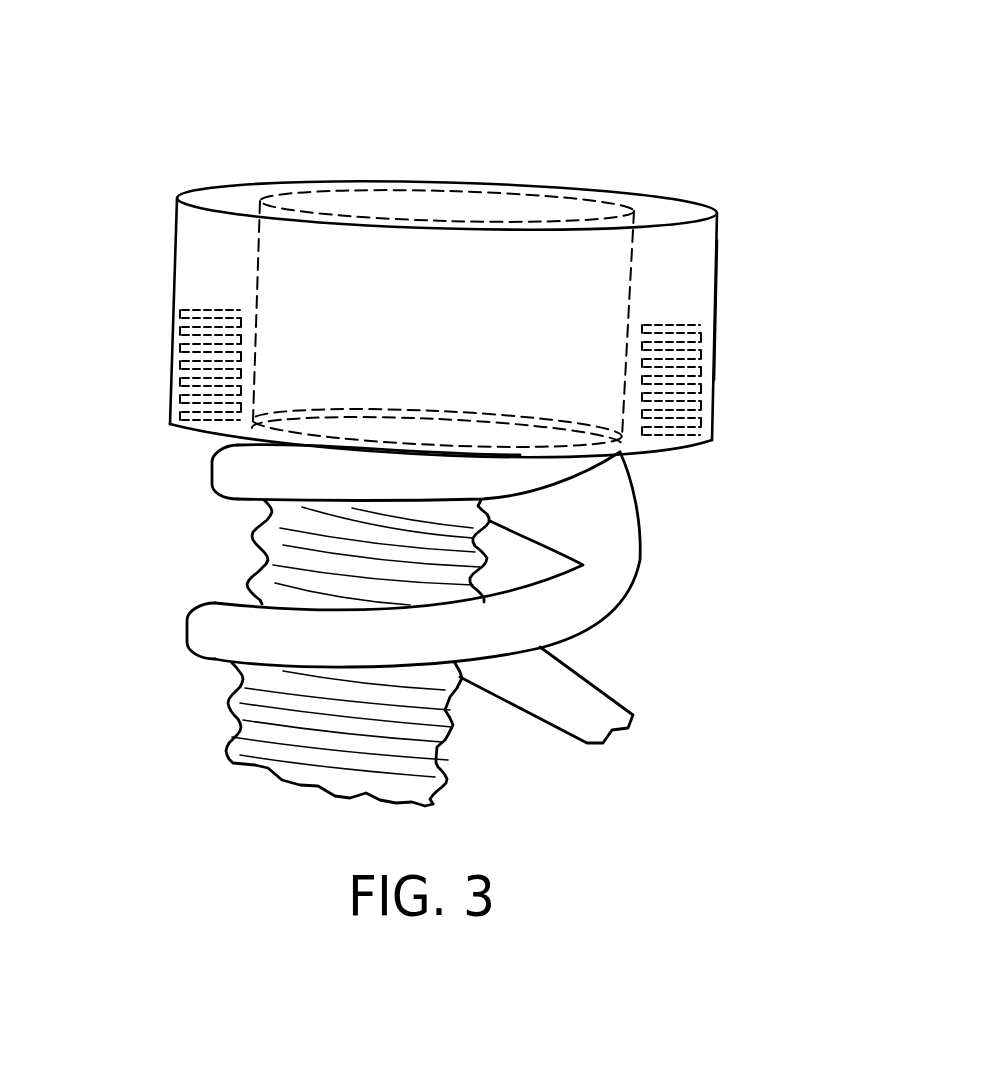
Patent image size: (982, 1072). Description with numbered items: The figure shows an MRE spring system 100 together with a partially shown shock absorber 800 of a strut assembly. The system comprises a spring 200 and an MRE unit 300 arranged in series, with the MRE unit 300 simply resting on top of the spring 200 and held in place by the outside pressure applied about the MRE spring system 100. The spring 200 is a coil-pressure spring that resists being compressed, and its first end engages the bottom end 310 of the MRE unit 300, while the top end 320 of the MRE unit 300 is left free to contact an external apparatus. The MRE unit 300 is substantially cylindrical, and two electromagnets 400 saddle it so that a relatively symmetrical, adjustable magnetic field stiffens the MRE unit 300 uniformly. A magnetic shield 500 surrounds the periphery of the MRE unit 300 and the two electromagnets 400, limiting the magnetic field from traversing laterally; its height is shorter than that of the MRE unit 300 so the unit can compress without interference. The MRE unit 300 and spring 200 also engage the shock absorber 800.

The MRE spring system 100 is at (190, 124).
The spring 200 is at (668, 617).
The MRE unit 300 is at (444, 170).
The bottom end 310 is at (624, 453).
The top end 320 is at (618, 192).
The electromagnets 400 is at (180, 358).
The magnetic shield 500 is at (717, 279).
The shock absorber 800 is at (232, 760).